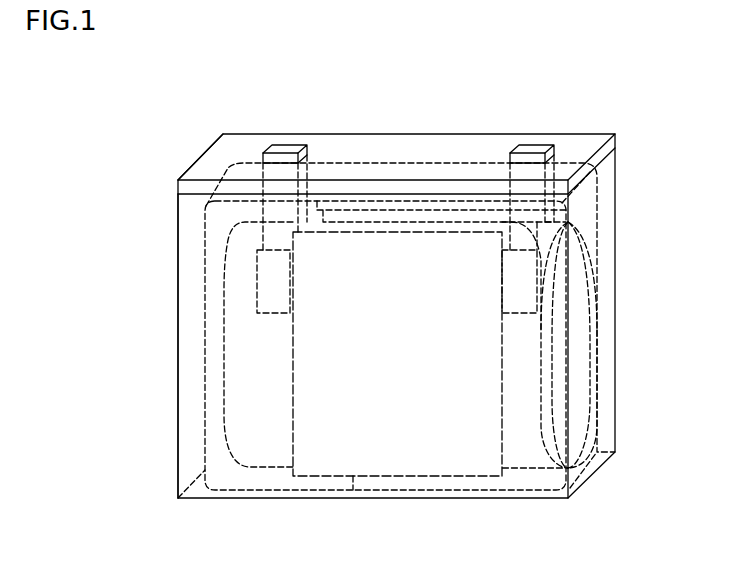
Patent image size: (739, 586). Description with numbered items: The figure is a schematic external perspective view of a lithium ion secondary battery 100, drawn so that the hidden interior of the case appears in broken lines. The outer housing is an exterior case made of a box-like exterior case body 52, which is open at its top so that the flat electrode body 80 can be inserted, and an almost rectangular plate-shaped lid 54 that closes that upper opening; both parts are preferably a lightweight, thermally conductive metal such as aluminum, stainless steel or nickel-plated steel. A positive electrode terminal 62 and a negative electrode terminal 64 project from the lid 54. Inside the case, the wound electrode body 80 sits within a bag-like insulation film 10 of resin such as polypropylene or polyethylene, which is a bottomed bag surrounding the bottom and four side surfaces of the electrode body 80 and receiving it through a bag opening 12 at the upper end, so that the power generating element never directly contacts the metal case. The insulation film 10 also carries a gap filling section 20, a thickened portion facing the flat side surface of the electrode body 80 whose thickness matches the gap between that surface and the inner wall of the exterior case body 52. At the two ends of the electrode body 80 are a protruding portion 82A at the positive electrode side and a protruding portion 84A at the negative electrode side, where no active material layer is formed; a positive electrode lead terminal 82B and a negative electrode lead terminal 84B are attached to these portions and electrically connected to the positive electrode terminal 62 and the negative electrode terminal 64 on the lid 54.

The lithium ion secondary battery 100 is at (626, 102).
The insulation film 10 is at (418, 165).
The bag opening 12 is at (586, 160).
The gap filling section 20 is at (323, 236).
The exterior case body 52 is at (177, 331).
The lid 54 is at (203, 153).
The positive electrode terminal 62 is at (532, 149).
The negative electrode terminal 64 is at (285, 150).
The electrode body 80 is at (582, 457).
The protruding portion at the positive electrode side 82A is at (533, 385).
The positive electrode lead terminal 82B is at (527, 290).
The protruding portion at the negative electrode side 84A is at (220, 378).
The negative electrode lead terminal 84B is at (262, 274).